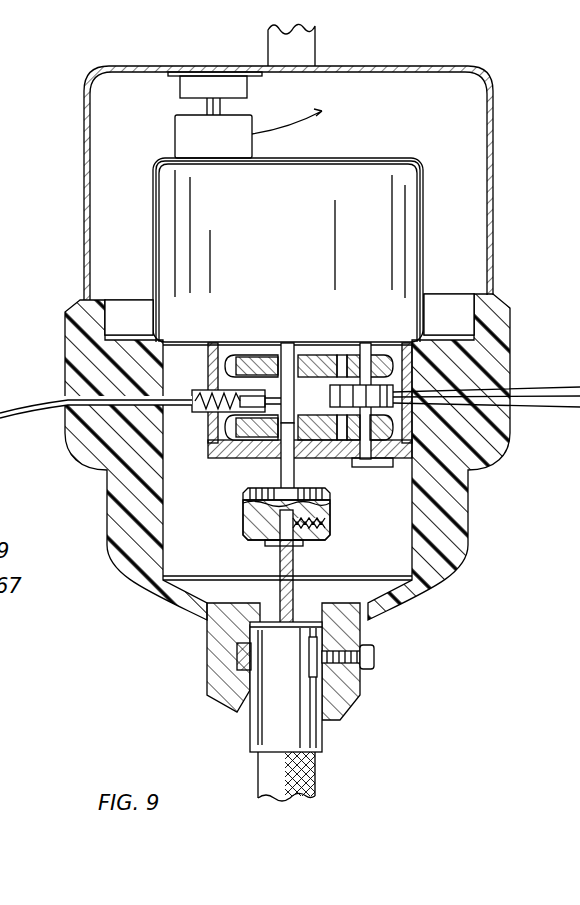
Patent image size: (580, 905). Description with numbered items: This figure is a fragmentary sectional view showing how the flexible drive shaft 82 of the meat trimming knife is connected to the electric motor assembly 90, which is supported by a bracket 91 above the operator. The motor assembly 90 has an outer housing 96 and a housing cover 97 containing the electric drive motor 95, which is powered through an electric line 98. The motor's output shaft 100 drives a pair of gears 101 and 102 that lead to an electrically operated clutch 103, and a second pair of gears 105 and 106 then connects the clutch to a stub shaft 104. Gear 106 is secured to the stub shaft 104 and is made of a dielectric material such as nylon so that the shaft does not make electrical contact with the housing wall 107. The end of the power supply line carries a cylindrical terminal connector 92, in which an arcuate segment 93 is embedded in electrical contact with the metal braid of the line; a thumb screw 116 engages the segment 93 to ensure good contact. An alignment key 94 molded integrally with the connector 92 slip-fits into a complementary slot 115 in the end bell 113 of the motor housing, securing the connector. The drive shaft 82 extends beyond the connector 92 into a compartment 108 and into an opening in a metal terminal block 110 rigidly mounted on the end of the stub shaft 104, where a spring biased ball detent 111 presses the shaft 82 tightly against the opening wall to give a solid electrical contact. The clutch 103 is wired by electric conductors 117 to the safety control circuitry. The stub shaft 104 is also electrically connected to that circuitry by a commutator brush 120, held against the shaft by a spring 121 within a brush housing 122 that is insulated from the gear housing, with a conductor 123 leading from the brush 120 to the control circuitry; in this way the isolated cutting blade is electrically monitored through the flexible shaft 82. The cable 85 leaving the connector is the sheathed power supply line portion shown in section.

The flexible drive shaft 82 is at (302, 560).
The cable 85 is at (315, 768).
The electric motor assembly 90 is at (84, 142).
The bracket 91 is at (268, 42).
The terminal connector 92 is at (298, 726).
The arcuate segment 93 is at (315, 668).
The alignment key 94 is at (210, 688).
The electric drive motor 95 is at (296, 240).
The outer housing 96 is at (455, 497).
The housing cover 97 is at (495, 196).
The electric line 98 is at (302, 118).
The output shaft 100 is at (290, 354).
The gear 101 is at (246, 355).
The gear 102 is at (380, 368).
The electrically operated clutch 103 is at (385, 392).
The stub shaft 104 is at (286, 478).
The gear 105 is at (382, 458).
The gear 106 is at (232, 428).
The housing wall 107 is at (205, 360).
The compartment 108 is at (187, 515).
The terminal block 110 is at (243, 518).
The spring biased ball detent 111 is at (330, 519).
The end bell 113 is at (343, 637).
The slot 115 is at (244, 651).
The thumb screw 116 is at (375, 657).
The electric conductors 117 is at (535, 402).
The commutator brush 120 is at (192, 410).
The spring 121 is at (208, 390).
The brush housing 122 is at (217, 390).
The conductor 123 is at (22, 402).